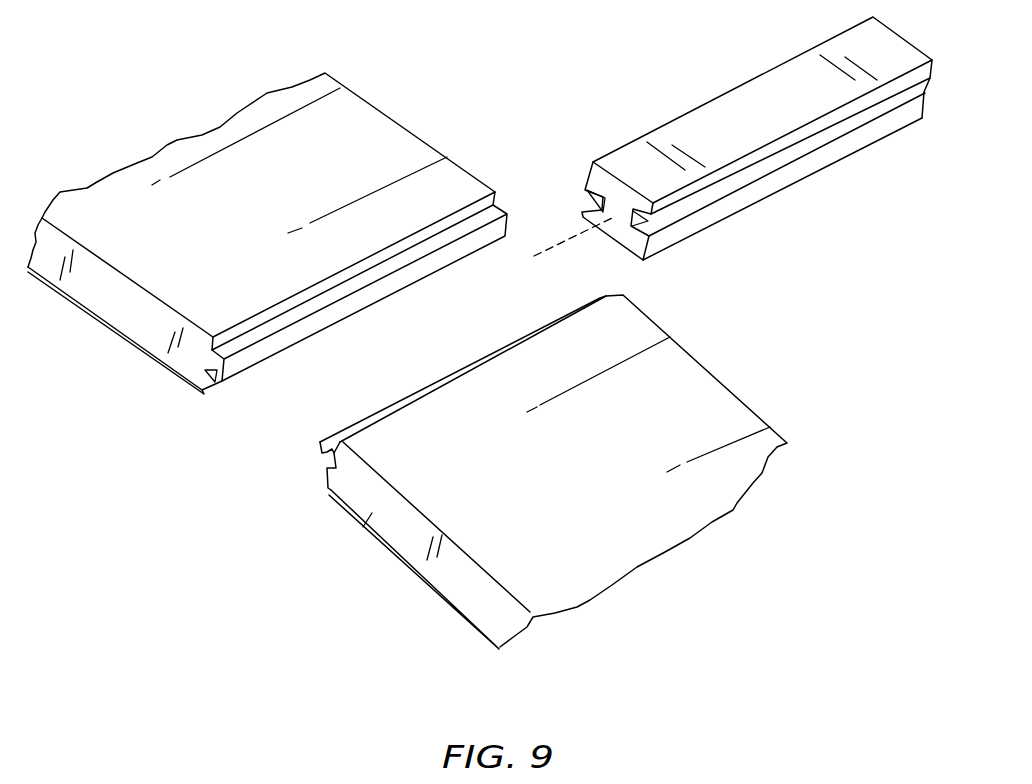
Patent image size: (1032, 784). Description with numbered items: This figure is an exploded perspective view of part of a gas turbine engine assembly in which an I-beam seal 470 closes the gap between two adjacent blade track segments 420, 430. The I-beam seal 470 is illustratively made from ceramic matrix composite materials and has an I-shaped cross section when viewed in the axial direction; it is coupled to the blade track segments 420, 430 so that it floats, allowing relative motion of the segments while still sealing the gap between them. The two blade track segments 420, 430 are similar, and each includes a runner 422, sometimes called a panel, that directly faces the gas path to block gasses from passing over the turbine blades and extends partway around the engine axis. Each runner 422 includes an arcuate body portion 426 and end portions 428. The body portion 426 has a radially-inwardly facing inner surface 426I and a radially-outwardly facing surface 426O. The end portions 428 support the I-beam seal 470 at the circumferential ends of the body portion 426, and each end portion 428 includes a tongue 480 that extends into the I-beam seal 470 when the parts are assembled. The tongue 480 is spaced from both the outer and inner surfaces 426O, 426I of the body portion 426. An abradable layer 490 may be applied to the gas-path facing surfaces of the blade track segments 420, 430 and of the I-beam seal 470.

The blade track segment 420 is at (258, 98).
The runner 422 is at (298, 121).
The body portion 426 is at (60, 295).
The radially-outwardly facing surface 426O is at (178, 246).
The radially-inwardly facing inner surface 426I is at (107, 323).
The end portion 428 is at (168, 400).
The blade track segment 430 is at (778, 431).
The I-beam seal 470 is at (772, 66).
The tongue 480 is at (242, 387).
The abradable layer 490 is at (623, 275).